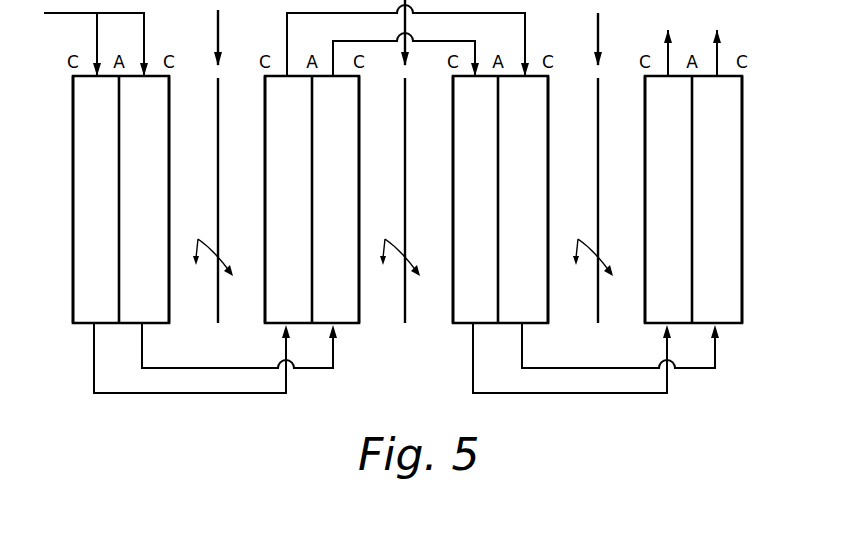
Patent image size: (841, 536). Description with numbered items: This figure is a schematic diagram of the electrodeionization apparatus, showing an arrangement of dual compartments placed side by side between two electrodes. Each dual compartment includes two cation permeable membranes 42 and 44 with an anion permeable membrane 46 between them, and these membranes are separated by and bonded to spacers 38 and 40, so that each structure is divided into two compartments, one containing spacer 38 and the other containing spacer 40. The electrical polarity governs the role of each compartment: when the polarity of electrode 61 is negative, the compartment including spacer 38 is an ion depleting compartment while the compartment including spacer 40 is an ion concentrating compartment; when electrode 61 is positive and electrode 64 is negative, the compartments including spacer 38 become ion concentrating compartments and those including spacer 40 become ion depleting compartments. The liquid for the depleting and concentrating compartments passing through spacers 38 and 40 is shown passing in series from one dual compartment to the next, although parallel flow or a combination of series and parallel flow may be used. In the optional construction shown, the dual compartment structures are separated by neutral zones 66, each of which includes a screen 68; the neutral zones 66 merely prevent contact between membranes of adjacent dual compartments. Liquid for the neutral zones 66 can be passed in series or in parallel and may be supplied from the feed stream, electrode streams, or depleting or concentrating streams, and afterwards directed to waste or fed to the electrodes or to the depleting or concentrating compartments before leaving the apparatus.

The spacer 38 is at (108, 178).
The spacer 40 is at (155, 178).
The cation permeable membrane 42 is at (73, 112).
The cation permeable membrane 44 is at (169, 118).
The anion permeable membrane 46 is at (119, 114).
The electrode 61 is at (49, 199).
The electrode 64 is at (776, 204).
The neutral zone 66 is at (211, 238).
The screen 68 is at (218, 158).